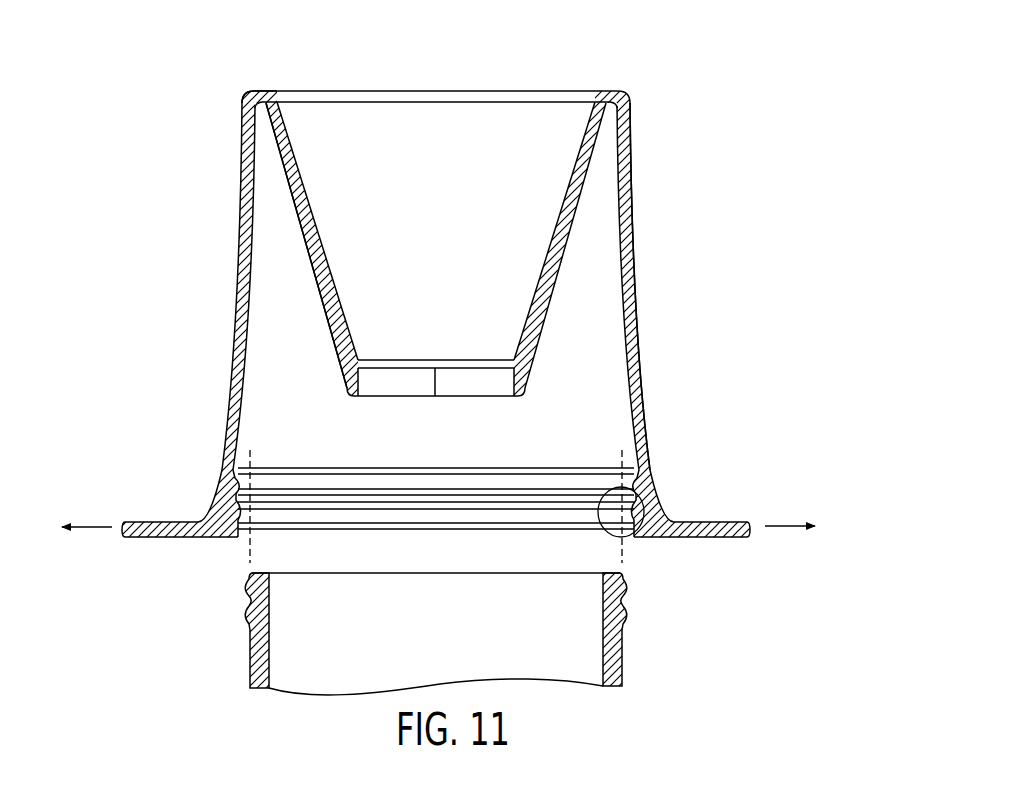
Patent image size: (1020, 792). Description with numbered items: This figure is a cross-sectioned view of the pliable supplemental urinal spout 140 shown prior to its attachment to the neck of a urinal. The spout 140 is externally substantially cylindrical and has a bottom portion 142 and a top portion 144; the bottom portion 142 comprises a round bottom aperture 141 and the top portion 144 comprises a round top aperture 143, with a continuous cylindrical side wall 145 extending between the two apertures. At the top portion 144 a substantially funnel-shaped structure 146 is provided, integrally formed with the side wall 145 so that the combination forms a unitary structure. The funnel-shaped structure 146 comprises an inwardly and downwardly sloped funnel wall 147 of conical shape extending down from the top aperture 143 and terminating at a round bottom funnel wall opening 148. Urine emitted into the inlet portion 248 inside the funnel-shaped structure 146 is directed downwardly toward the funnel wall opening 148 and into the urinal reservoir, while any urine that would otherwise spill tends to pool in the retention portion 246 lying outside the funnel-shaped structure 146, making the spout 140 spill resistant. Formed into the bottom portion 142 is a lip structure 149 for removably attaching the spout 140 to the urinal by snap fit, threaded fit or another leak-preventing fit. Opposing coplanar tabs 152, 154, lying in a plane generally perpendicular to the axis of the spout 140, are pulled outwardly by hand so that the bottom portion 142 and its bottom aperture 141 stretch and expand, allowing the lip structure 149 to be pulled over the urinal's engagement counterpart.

The pliable supplemental urinal spout 140 is at (438, 306).
The round bottom aperture 141 is at (366, 528).
The bottom portion 142 is at (644, 419).
The round top aperture 143 is at (513, 90).
The top portion 144 is at (243, 148).
The continuous cylindrical side wall 145 is at (634, 226).
The funnel-shaped structure 146 is at (307, 212).
The funnel wall 147 is at (308, 244).
The bottom funnel wall opening 148 is at (437, 397).
The lip structure 149 is at (610, 533).
The tab 152 is at (177, 522).
The tab 154 is at (697, 522).
The retention portion 246 is at (304, 319).
The inlet portion 248 is at (457, 261).